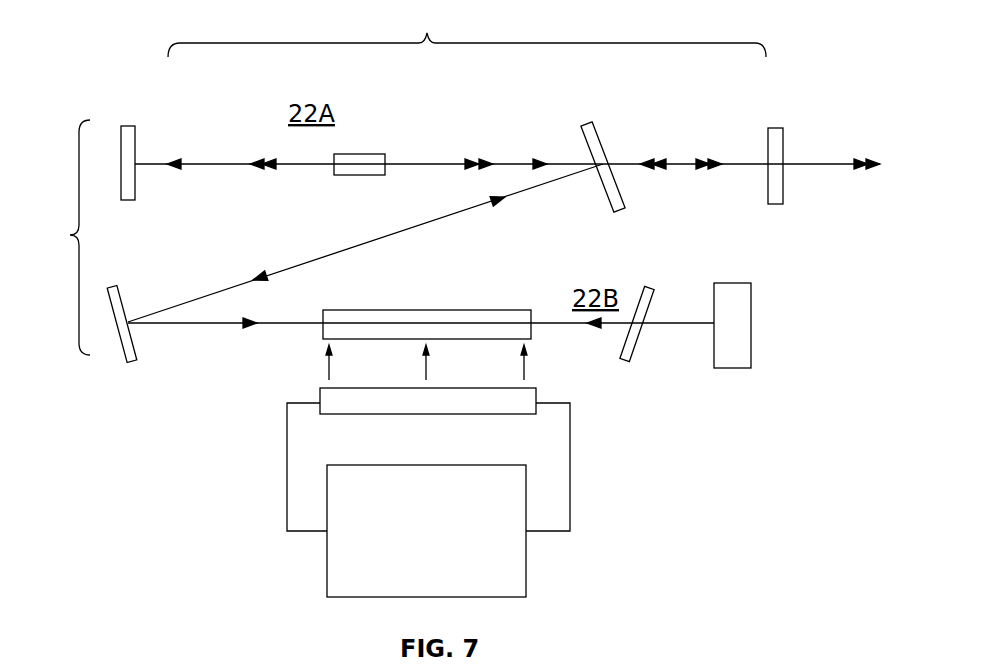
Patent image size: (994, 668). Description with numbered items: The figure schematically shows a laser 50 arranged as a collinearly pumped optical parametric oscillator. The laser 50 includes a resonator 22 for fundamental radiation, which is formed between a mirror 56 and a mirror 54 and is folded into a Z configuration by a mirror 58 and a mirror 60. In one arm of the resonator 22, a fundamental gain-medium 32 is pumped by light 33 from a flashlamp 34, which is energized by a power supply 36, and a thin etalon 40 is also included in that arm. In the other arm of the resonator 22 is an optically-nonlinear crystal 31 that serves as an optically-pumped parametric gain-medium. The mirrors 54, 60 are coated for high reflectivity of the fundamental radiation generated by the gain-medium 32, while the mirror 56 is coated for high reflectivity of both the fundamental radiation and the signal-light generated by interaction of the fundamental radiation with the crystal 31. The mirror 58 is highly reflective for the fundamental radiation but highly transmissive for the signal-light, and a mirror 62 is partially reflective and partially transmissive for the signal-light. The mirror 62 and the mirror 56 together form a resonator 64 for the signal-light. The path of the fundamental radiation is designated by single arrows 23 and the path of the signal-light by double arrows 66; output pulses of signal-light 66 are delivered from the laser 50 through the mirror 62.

The resonator 22 is at (70, 235).
The single arrows 23 is at (176, 162).
The optically-nonlinear crystal 31 is at (374, 160).
The gain-medium 32 is at (476, 314).
The light 33 is at (327, 365).
The flashlamp 34 is at (507, 412).
The power supply 36 is at (428, 500).
The thin etalon 40 is at (640, 336).
The laser 50 is at (688, 490).
The mirror 54 is at (736, 362).
The mirror 56 is at (128, 130).
The mirror 58 is at (591, 125).
The mirror 60 is at (136, 360).
The mirror 62 is at (779, 143).
The resonator 64 is at (461, 43).
The double arrows 66 is at (256, 167).